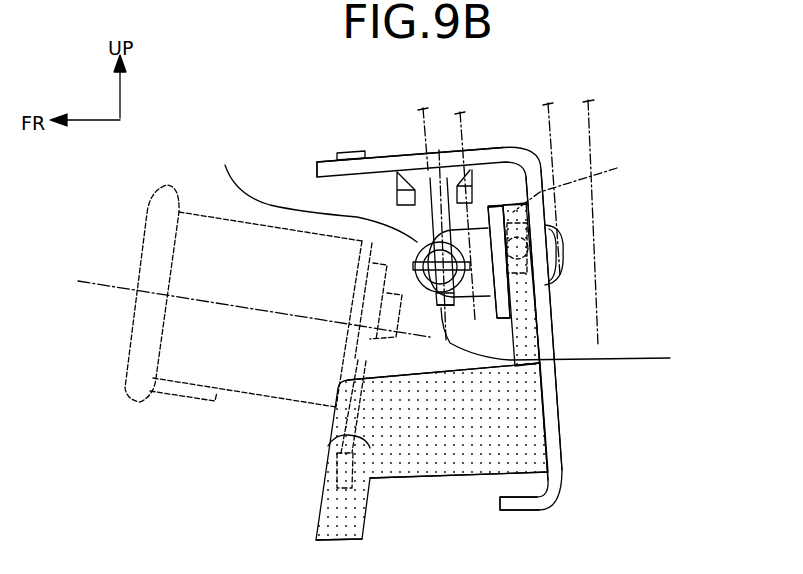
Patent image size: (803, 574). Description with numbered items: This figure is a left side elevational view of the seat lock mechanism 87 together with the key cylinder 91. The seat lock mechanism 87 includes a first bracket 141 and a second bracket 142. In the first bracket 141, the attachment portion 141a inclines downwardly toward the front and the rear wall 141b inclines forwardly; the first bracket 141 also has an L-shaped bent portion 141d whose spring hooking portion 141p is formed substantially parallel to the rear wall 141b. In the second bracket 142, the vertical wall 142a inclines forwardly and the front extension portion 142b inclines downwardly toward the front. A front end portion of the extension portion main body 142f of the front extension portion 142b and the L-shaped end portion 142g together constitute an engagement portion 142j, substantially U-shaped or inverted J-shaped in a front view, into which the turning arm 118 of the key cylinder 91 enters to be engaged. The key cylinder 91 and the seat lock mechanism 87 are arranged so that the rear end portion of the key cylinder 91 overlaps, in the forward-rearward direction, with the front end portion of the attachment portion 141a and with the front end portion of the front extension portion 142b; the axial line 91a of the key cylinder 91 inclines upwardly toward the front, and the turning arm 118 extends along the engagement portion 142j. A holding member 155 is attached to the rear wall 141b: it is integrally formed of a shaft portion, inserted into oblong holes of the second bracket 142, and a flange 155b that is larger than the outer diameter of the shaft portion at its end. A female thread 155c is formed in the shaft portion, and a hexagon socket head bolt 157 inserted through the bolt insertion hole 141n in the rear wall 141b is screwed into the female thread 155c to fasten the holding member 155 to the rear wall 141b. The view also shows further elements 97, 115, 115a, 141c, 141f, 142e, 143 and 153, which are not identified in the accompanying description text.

The seat lock mechanism 87 is at (327, 160).
The key cylinder 91 is at (143, 237).
The axial line 91a is at (250, 307).
The bolt axis 97 is at (590, 125).
The body 115 is at (633, 143).
The body axis 115a is at (593, 185).
The turning arm 118 is at (340, 475).
The first bracket 141 is at (560, 393).
The attachment portion 141a is at (393, 154).
The rear wall 141b is at (556, 337).
The bracket lower tab 141c is at (520, 512).
The L-shaped bent portion 141d is at (441, 308).
The bracket projection 141f is at (351, 151).
The bolt insertion hole 141n is at (570, 262).
The spring hooking portion 141p is at (442, 167).
The second bracket 142 is at (433, 482).
The vertical wall 142a is at (507, 150).
The front extension portion 142b is at (517, 433).
The plate vertical portion 142e is at (525, 298).
The extension portion main body 142f is at (463, 467).
The L-shaped end portion 142g is at (372, 480).
The engagement portion 142j is at (318, 542).
The stay 143 is at (311, 192).
The bolt head 153 is at (397, 200).
The holding member 155 is at (490, 200).
The flange 155b is at (443, 306).
The female thread 155c is at (525, 213).
The hexagon socket head bolt 157 is at (566, 245).